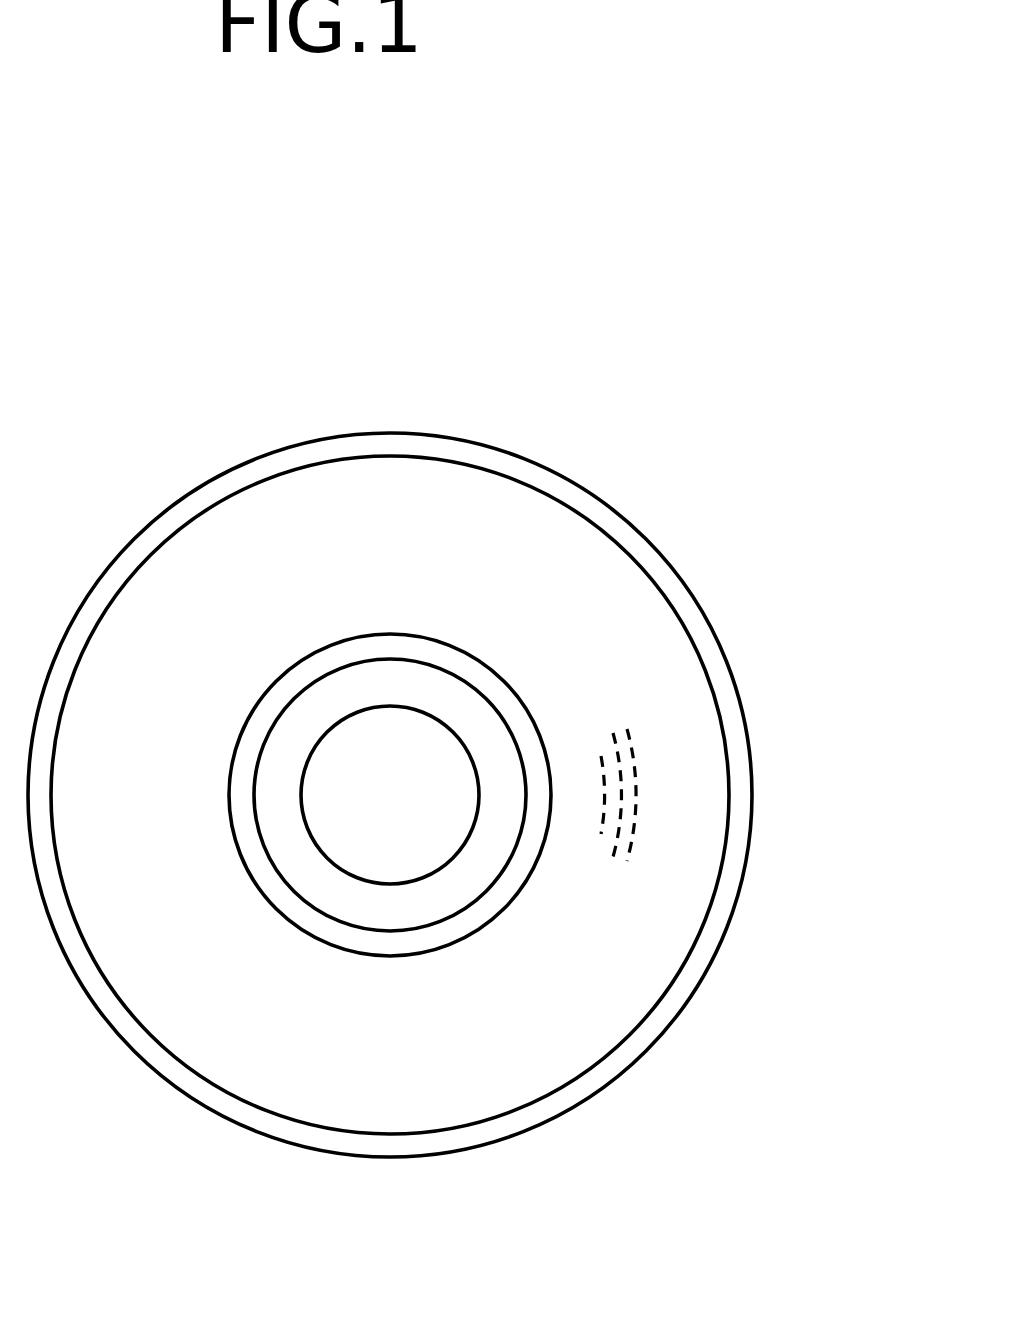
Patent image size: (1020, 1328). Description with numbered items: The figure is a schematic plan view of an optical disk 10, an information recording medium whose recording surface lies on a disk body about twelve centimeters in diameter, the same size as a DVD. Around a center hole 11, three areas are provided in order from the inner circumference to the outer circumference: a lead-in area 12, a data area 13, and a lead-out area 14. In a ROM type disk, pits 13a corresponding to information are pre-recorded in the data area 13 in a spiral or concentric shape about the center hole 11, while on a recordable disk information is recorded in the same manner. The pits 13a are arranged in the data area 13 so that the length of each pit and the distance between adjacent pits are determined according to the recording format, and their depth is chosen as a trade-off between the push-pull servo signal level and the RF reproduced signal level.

The optical disk 10 is at (700, 517).
The center hole 11 is at (398, 852).
The lead-in area 12 is at (500, 893).
The data area 13 is at (675, 856).
The pits 13a is at (652, 786).
The lead-out area 14 is at (743, 738).